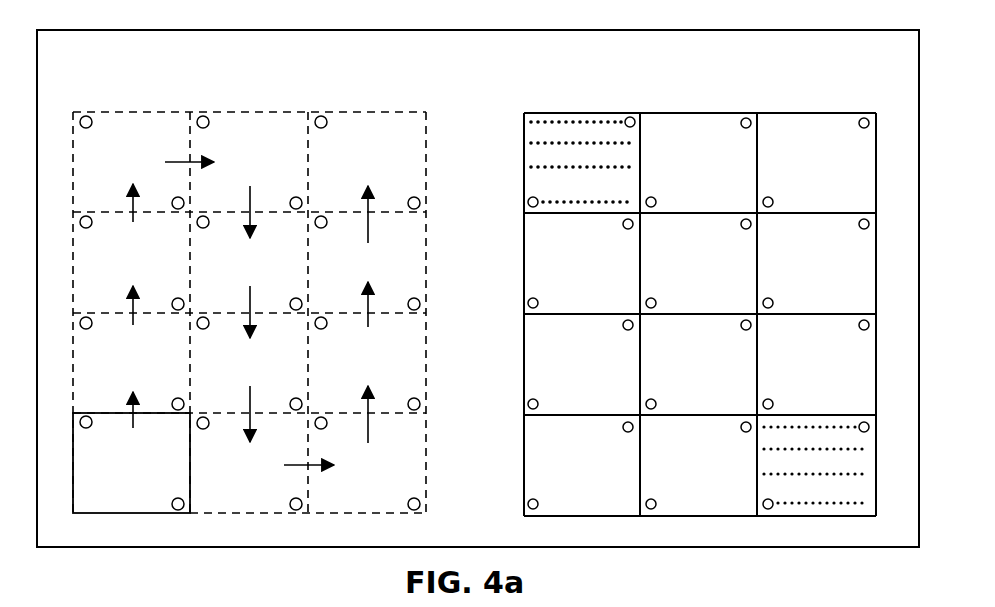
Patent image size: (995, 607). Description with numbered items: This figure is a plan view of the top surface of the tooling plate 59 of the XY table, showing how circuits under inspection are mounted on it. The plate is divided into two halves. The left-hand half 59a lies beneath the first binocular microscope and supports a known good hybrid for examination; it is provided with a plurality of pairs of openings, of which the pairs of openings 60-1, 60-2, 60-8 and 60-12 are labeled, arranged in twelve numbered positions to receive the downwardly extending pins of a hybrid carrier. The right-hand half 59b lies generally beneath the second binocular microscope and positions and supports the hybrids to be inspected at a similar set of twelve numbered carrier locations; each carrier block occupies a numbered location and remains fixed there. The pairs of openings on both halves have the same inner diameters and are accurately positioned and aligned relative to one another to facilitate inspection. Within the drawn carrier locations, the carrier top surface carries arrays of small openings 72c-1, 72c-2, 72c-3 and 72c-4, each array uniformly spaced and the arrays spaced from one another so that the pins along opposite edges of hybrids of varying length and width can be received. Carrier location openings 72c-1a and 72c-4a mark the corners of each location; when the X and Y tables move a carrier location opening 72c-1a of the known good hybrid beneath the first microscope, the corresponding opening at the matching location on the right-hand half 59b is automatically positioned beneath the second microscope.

The tooling plate 59 is at (431, 46).
The left-hand half of tooling plate 59a is at (322, 71).
The right-hand half of tooling plate 59b is at (805, 71).
The pair of openings 60-1 is at (172, 503).
The pair of openings 60-2 is at (90, 328).
The pair of openings 60-8 is at (290, 503).
The pair of openings 60-12 is at (326, 126).
The array of small openings 72c-1 is at (528, 122).
The array of small openings 72c-2 is at (528, 143).
The array of small openings 72c-3 is at (528, 167).
The array of small openings 72c-4 is at (530, 201).
The carrier location opening 72c-1a is at (631, 116).
The carrier location opening 72c-4a is at (527, 203).